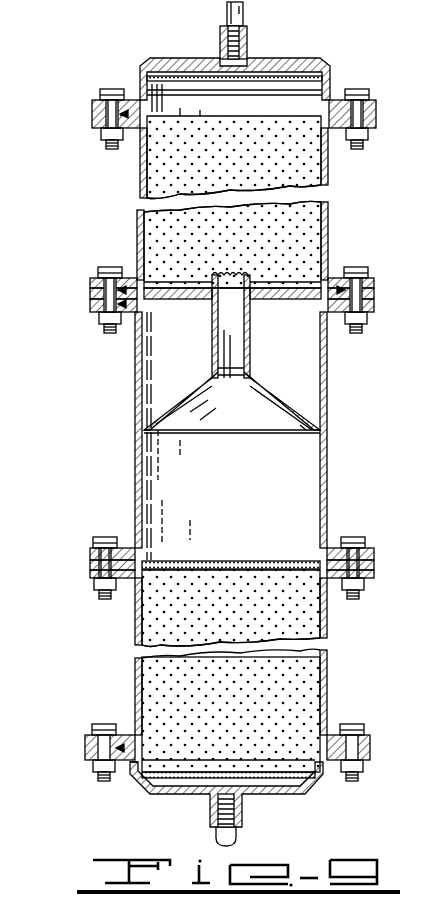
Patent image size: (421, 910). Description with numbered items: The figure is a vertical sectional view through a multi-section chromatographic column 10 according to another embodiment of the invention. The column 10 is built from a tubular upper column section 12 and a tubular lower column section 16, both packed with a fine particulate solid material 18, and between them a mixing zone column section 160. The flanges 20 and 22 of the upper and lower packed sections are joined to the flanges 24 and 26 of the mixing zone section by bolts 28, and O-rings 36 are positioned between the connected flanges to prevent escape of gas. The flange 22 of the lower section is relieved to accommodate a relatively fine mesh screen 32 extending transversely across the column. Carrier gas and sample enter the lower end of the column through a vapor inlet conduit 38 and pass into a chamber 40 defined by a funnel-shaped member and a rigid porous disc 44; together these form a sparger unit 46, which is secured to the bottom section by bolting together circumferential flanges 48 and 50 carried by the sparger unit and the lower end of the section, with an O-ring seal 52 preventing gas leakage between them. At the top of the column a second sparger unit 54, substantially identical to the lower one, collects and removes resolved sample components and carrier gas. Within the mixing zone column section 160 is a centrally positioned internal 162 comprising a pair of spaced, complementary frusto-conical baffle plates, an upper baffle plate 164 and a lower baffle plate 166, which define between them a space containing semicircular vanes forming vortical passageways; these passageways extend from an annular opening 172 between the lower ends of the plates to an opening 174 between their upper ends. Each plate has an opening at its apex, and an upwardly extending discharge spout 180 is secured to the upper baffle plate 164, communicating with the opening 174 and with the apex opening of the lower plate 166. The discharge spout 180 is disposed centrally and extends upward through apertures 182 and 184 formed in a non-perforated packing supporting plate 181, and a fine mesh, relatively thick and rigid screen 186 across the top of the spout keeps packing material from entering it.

The chromatographic column 10 is at (332, 230).
The upper column section 12 is at (140, 180).
The lower column section 16 is at (134, 670).
The particulate solid material 18 is at (247, 161).
The flange of upper column section 20 is at (90, 285).
The flange of lower column section 22 is at (374, 570).
The flange of mixing zone section 24 is at (90, 306).
The flange of mixing zone section 26 is at (374, 553).
The bolts 28 is at (352, 268).
The fine mesh screen 32 is at (188, 562).
The O-rings 36 is at (126, 280).
The vapor inlet conduit 38 is at (234, 838).
The chamber 40 is at (160, 786).
The porous disc 44 is at (298, 780).
The sparger unit 46 is at (136, 794).
The circumferential flange of sparger unit 48 is at (100, 96).
The circumferential flange of bottom column section 50 is at (92, 114).
The O-ring seal 52 is at (124, 128).
The second sparger unit 54 is at (272, 60).
The mixing zone column section 160 is at (327, 492).
The internal 162 is at (304, 402).
The upper frusto-conical baffle plate 164 is at (184, 386).
The lower frusto-conical baffle plate 166 is at (182, 433).
The annular opening 172 is at (312, 433).
The opening 174 is at (254, 366).
The discharge spout 180 is at (250, 324).
The non-perforated packing supporting plate 181 is at (192, 288).
The aperture 182 is at (204, 282).
The aperture 184 is at (258, 288).
The screen 186 is at (236, 270).